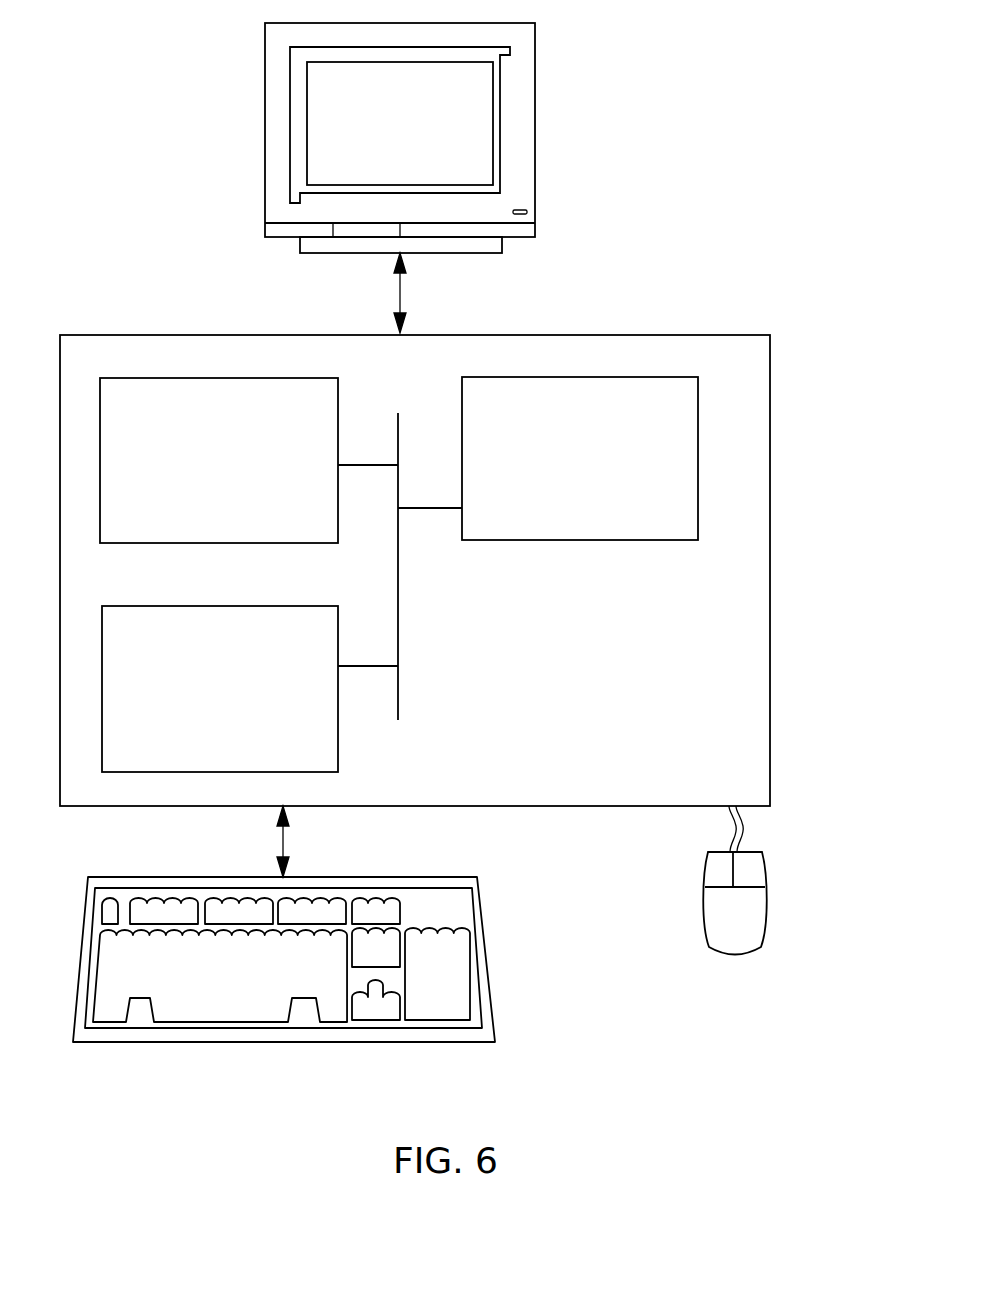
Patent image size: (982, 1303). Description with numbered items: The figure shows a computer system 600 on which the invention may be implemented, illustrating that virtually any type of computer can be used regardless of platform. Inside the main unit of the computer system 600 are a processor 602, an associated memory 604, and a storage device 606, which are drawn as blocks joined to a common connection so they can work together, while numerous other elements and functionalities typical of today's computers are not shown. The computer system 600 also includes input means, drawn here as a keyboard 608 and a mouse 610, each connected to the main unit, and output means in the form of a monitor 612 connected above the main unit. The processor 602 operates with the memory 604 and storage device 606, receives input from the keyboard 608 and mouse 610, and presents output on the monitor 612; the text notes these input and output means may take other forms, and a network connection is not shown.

The computer system 600 is at (793, 177).
The processor 602 is at (198, 472).
The memory 604 is at (195, 701).
The storage device 606 is at (556, 471).
The keyboard 608 is at (218, 986).
The mouse 610 is at (712, 927).
The monitor 612 is at (378, 139).